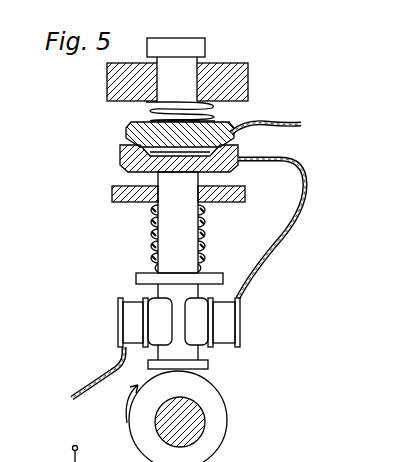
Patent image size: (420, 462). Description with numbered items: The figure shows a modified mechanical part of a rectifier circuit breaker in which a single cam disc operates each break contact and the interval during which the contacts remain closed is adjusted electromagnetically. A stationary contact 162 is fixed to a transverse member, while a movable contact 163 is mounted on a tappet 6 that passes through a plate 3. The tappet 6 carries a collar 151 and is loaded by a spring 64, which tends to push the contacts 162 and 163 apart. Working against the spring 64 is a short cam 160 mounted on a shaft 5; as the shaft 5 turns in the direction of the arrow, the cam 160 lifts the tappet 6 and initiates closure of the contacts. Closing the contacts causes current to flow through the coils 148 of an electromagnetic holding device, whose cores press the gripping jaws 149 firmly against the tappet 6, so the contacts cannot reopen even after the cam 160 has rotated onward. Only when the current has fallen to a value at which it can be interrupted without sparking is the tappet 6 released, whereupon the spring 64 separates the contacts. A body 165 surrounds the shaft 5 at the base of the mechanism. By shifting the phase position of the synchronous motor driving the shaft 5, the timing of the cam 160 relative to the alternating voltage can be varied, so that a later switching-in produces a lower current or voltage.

The plate 3 is at (112, 192).
The shaft 5 is at (198, 427).
The tappet 6 is at (183, 257).
The spring 64 is at (208, 228).
The coils 148 is at (123, 331).
The gripping jaws 149 is at (163, 317).
The collar 151 is at (136, 279).
The cam 160 is at (180, 373).
The stationary contact 162 is at (128, 127).
The movable contact 163 is at (122, 160).
The cam 165 is at (207, 447).